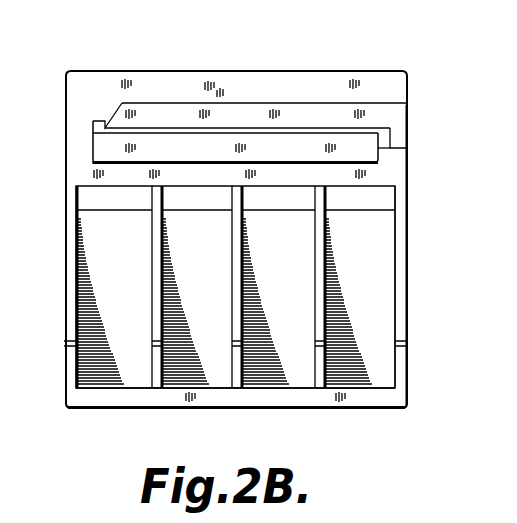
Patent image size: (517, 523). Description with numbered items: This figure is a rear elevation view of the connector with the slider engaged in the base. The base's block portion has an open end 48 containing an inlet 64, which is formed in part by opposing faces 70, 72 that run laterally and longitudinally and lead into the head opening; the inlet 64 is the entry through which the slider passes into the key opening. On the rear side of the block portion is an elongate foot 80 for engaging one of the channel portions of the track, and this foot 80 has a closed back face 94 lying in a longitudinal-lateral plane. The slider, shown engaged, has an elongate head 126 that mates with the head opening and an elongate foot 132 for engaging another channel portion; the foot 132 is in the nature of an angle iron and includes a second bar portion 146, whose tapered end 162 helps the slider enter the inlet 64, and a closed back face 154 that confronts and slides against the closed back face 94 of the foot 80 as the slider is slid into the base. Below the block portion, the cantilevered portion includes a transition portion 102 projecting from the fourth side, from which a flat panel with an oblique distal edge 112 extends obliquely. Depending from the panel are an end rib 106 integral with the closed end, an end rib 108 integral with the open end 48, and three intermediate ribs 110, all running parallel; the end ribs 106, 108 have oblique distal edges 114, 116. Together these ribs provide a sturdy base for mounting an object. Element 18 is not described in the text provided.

The housing portion 18 is at (8, 49).
The open end 48 is at (203, 239).
The opposing face 72 is at (14, 105).
The inlet 64 is at (16, 135).
The opposing face 70 is at (0, 160).
The elongate foot 80 is at (93, 147).
The closed back face 94 is at (175, 128).
The transition portion 102 is at (120, 198).
The end rib 106 is at (65, 358).
The end rib 108 is at (408, 311).
The intermediate ribs 110 is at (313, 370).
The oblique distal edge 112 is at (172, 397).
The oblique distal edge 114 is at (80, 368).
The oblique distal edge 116 is at (393, 357).
The elongate head 126 is at (400, 142).
The elongate foot 132 is at (394, 113).
The second bar portion 146 is at (240, 115).
The closed back face 154 is at (390, 149).
The tapered end 162 is at (118, 104).